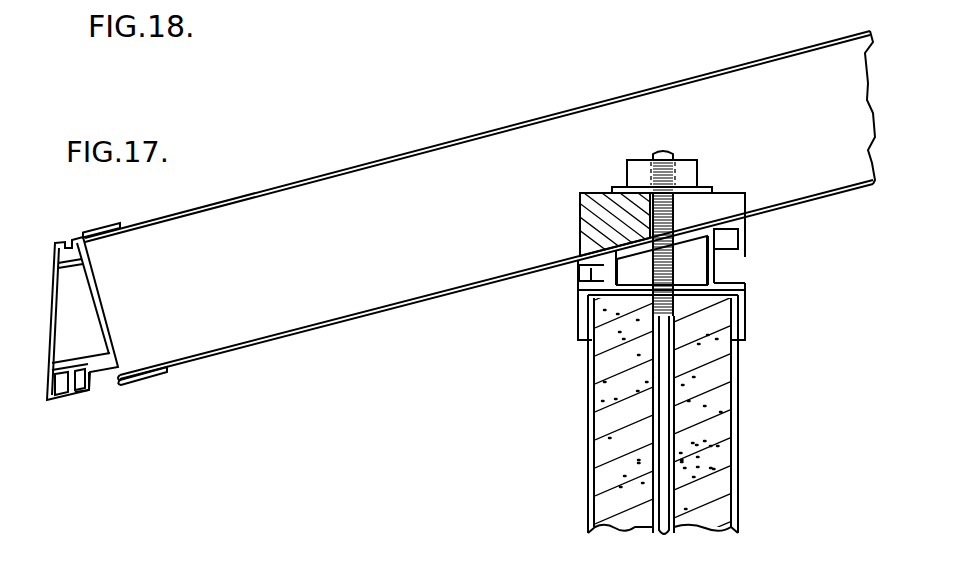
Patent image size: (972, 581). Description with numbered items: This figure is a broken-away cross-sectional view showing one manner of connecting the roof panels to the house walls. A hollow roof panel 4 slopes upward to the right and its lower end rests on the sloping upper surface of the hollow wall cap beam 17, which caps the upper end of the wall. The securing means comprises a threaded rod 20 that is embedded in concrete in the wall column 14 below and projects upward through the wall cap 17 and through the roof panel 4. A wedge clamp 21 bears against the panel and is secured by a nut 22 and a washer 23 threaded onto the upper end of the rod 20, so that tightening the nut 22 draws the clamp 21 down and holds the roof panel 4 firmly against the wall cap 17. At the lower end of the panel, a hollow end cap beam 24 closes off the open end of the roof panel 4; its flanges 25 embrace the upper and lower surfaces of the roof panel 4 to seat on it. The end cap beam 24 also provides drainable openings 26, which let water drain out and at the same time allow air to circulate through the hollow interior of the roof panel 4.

The roof panel 4 is at (671, 74).
The wall column 14 is at (737, 460).
The wall cap beam 17 is at (745, 268).
The threaded rod 20 is at (677, 428).
The wedge clamp 21 is at (723, 208).
The nut 22 is at (688, 170).
The washer 23 is at (602, 192).
The hollow end cap beam 24 is at (51, 292).
The flanges 25 is at (110, 224).
The drainable openings 26 is at (107, 372).